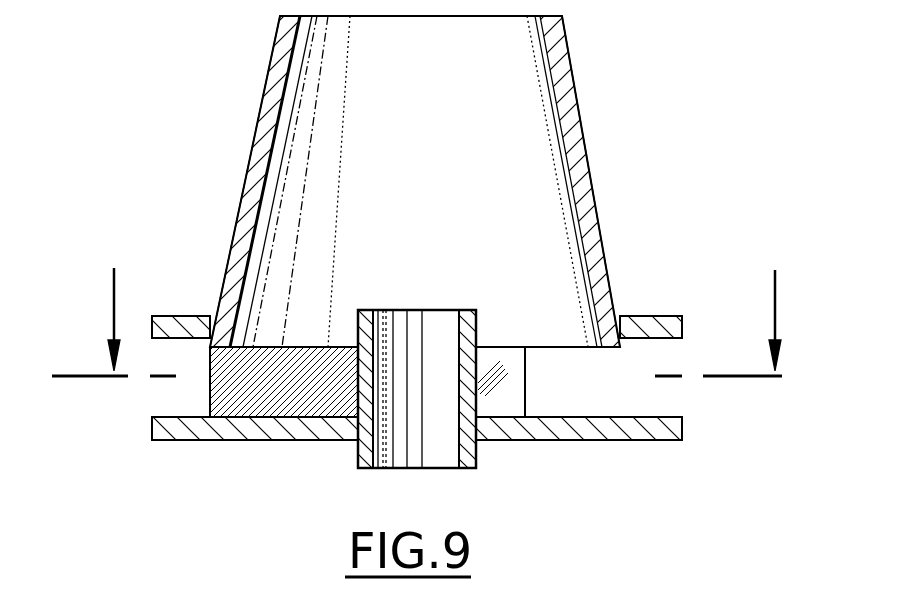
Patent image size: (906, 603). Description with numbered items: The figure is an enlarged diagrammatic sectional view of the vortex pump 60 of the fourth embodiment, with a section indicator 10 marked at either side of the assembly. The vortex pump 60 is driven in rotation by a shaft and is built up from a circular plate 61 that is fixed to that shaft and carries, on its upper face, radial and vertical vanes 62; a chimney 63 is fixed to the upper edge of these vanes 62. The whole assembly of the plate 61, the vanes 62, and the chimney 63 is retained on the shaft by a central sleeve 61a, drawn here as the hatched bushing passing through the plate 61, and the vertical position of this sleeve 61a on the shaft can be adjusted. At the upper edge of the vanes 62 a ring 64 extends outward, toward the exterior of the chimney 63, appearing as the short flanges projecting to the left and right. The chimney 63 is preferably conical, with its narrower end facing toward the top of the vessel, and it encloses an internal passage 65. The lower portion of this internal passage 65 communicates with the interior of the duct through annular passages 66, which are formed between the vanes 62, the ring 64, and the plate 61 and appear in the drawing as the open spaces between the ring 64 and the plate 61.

The section line 10- 10 is at (417, 322).
The vortex pump 60 is at (643, 221).
The circular plate 61 is at (615, 433).
The sleeve 61a is at (477, 453).
The vanes 62 is at (295, 395).
The chimney 63 is at (570, 127).
The ring 64 is at (187, 315).
The internal passage 65 is at (337, 138).
The annular passages 66 is at (173, 397).